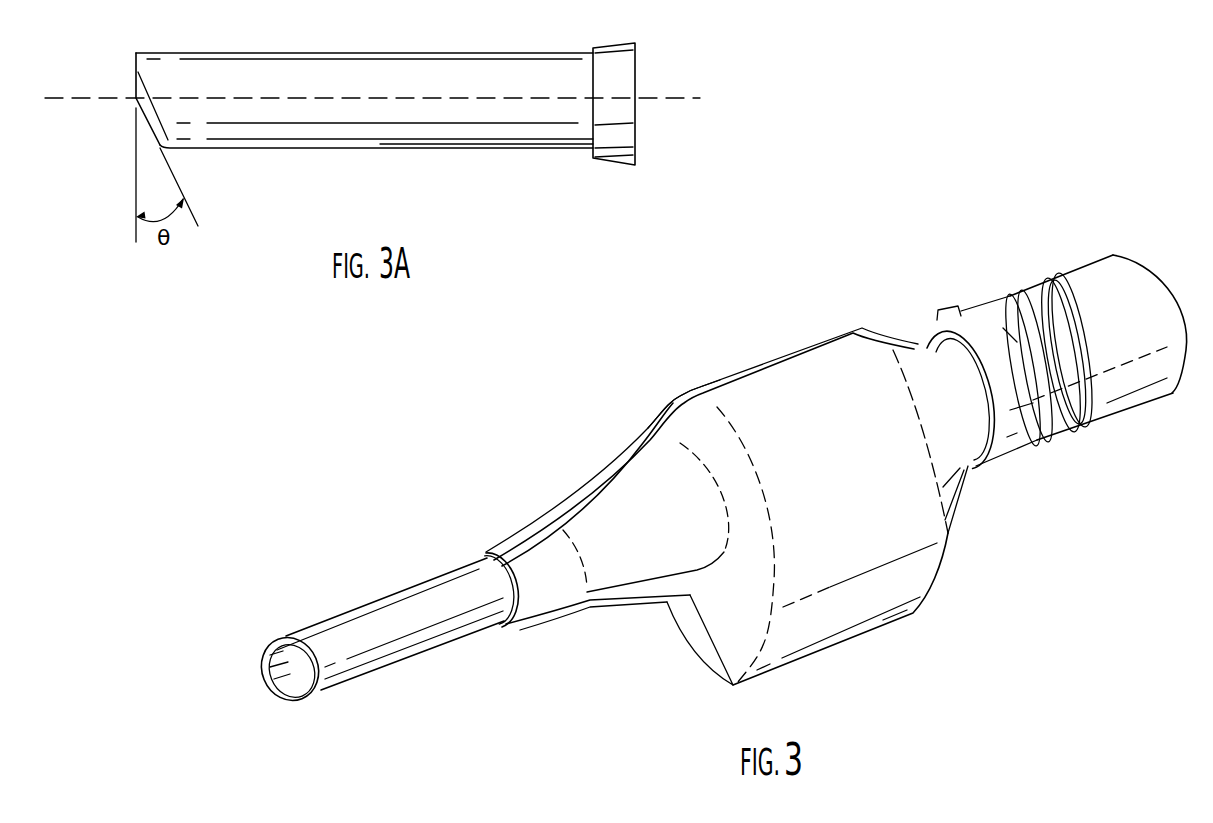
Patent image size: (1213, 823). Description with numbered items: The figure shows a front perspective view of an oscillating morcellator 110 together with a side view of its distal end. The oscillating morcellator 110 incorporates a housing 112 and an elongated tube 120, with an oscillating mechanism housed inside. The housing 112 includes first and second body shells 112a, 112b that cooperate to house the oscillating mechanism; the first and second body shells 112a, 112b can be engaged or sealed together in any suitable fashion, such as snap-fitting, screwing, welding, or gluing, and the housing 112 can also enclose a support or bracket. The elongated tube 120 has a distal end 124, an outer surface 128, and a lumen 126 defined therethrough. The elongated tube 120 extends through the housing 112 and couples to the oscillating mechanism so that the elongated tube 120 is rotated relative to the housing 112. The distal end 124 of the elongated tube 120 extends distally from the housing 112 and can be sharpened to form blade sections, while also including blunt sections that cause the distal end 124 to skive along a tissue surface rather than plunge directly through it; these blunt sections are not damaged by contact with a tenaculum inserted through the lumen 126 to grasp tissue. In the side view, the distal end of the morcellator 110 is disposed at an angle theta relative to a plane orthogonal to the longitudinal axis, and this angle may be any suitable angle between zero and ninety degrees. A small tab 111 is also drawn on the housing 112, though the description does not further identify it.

In FIG. 3, the oscillating morcellator 110 is at (747, 296).
In FIG. 3, the alignment tab 111 is at (947, 307).
In FIG. 3A, the housing 112 is at (617, 164).
In FIG. 3, the housing 112 is at (776, 343).
In FIG. 3, the first body shell 112a is at (660, 420).
In FIG. 3, the second body shell 112b is at (797, 663).
In FIG. 3A, the elongated tube 120 is at (461, 154).
In FIG. 3, the elongated tube 120 is at (398, 584).
In FIG. 3A, the distal end 124 is at (137, 52).
In FIG. 3, the distal end 124 is at (274, 633).
In FIG. 3, the lumen 126 is at (289, 677).
In FIG. 3, the outer surface 128 is at (438, 653).